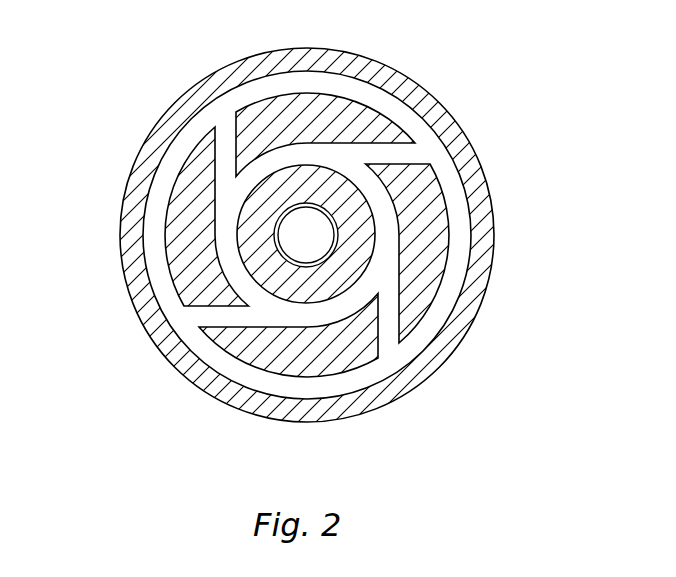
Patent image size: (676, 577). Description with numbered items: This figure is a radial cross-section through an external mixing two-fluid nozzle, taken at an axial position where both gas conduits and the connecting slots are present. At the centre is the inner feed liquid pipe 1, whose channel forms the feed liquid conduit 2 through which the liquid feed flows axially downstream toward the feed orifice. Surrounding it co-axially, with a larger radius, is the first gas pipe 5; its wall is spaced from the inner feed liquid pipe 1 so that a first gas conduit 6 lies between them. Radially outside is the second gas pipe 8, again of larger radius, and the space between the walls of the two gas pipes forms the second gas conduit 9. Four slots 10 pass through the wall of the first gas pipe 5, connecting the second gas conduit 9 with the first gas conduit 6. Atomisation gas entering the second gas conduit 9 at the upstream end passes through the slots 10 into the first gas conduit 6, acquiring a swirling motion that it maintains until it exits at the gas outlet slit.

The inner feed liquid pipe 1 is at (302, 280).
The feed liquid conduit 2 is at (307, 245).
The first gas pipe 5 is at (185, 262).
The first gas conduit 6 is at (385, 243).
The second gas pipe 8 is at (133, 195).
The second gas conduit 9 is at (448, 196).
The slots 10 is at (392, 153).